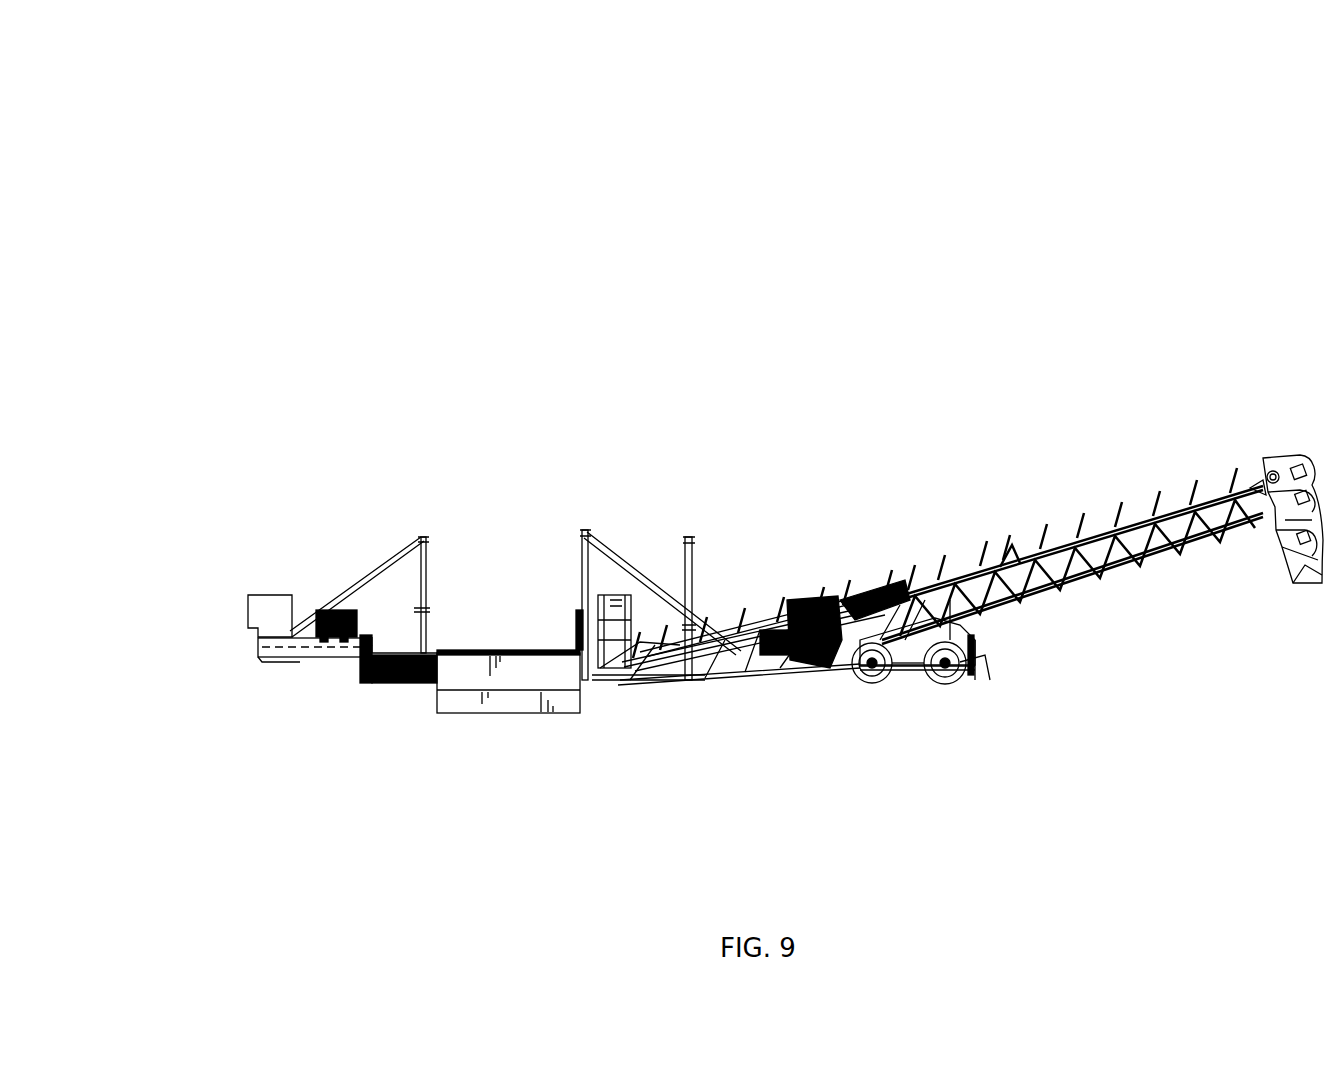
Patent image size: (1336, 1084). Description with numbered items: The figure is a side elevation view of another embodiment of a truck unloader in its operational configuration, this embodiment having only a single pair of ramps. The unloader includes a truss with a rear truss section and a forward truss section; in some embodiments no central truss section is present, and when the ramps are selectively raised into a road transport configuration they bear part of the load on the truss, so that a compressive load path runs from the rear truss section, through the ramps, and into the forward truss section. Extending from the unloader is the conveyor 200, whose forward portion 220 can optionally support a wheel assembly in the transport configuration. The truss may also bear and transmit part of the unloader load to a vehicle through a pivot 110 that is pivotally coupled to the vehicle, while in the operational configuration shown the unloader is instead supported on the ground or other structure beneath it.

The conveyor assembly 200 is at (938, 303).
The forward portion of the conveyor 220 is at (972, 503).
The pivot 110 is at (90, 674).